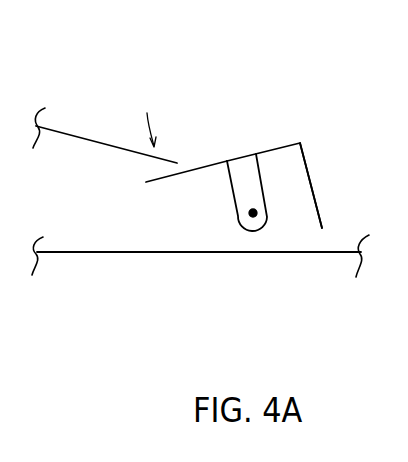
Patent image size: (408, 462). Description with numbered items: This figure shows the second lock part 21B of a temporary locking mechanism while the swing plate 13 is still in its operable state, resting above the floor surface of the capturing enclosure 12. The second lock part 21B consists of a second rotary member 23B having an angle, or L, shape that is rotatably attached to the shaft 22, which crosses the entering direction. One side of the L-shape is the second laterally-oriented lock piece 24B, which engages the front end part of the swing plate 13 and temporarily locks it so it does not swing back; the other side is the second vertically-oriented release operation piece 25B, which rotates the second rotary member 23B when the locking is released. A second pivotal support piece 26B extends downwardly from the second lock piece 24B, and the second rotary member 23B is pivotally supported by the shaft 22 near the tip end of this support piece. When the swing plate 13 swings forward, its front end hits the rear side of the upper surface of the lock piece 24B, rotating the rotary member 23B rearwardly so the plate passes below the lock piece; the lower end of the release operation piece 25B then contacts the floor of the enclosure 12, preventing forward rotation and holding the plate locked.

The capturing enclosure 12 is at (276, 254).
The swing plate 13 is at (64, 132).
The second lock part 21B is at (237, 120).
The shaft 22 is at (249, 213).
The second rotary member 23B is at (375, 43).
The second lock piece 24B is at (283, 147).
The second release operation piece 25B is at (312, 185).
The second pivotal support piece 26B is at (248, 185).